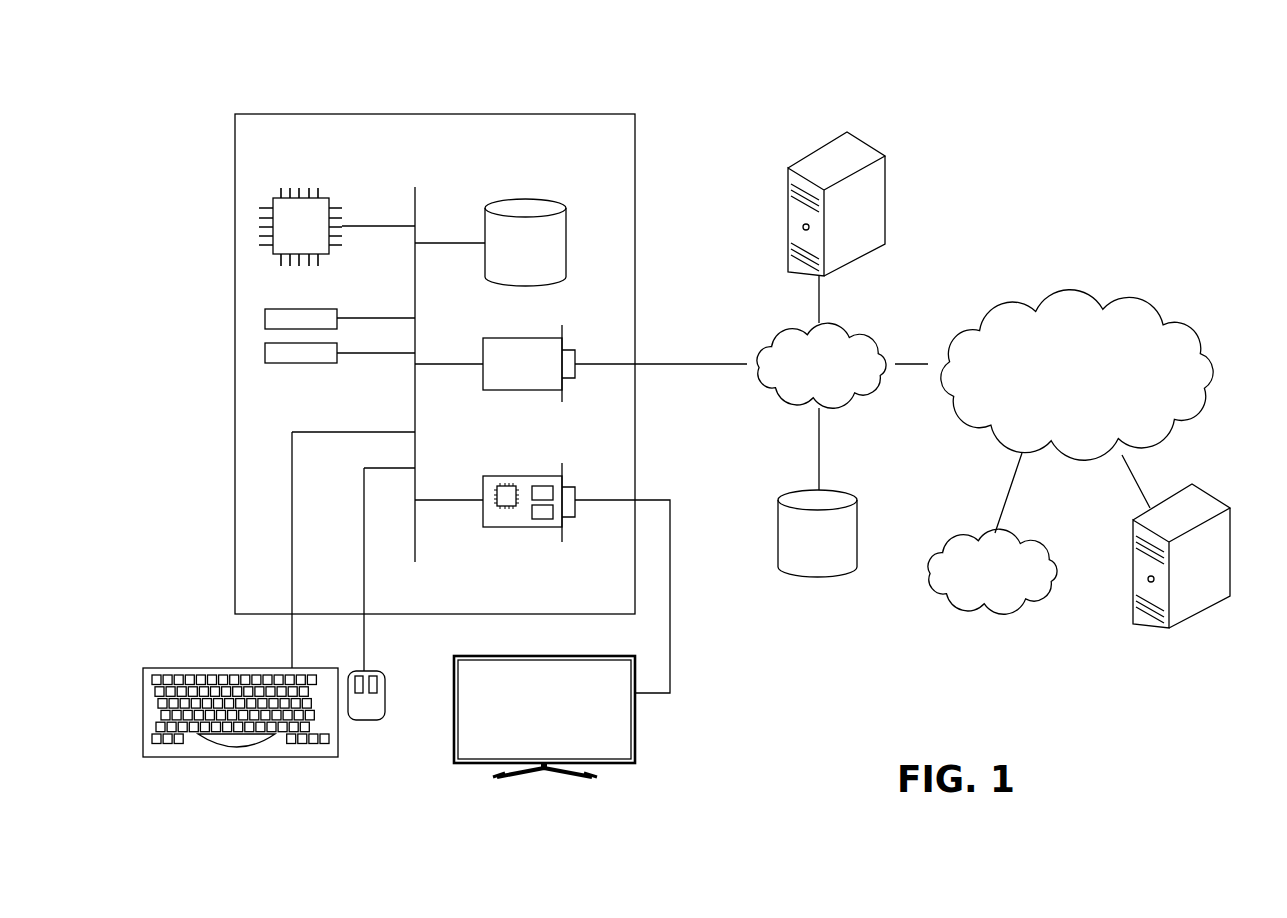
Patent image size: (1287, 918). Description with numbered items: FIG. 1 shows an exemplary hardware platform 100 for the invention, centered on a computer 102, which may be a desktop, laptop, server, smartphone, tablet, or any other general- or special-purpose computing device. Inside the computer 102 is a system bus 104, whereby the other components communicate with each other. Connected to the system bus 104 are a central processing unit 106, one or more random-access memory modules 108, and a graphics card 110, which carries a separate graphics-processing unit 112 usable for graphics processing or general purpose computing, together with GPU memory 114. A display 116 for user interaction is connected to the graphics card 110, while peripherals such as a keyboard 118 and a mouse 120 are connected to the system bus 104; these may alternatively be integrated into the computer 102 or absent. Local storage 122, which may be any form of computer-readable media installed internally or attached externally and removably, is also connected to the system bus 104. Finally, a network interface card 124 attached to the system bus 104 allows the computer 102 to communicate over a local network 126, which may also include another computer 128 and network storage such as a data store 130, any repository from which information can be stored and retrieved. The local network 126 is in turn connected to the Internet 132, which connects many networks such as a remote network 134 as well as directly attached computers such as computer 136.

The system 100 is at (1165, 116).
The computer 102 is at (590, 113).
The system bus 104 is at (418, 197).
The central processing unit 106 is at (322, 198).
The random-access memory modules 108 is at (342, 352).
The graphics card 110 is at (481, 487).
The graphics-processing unit 112 is at (506, 506).
The GPU memory 114 is at (540, 518).
The display 116 is at (636, 745).
The keyboard 118 is at (243, 757).
The mouse 120 is at (365, 720).
The local storage 122 is at (568, 226).
The network interface card 124 is at (481, 347).
The local network 126 is at (878, 325).
The computer 128 is at (875, 145).
The data store 130 is at (847, 490).
The Internet 132 is at (1118, 290).
The remote network 134 is at (1045, 532).
The computer 136 is at (1210, 492).